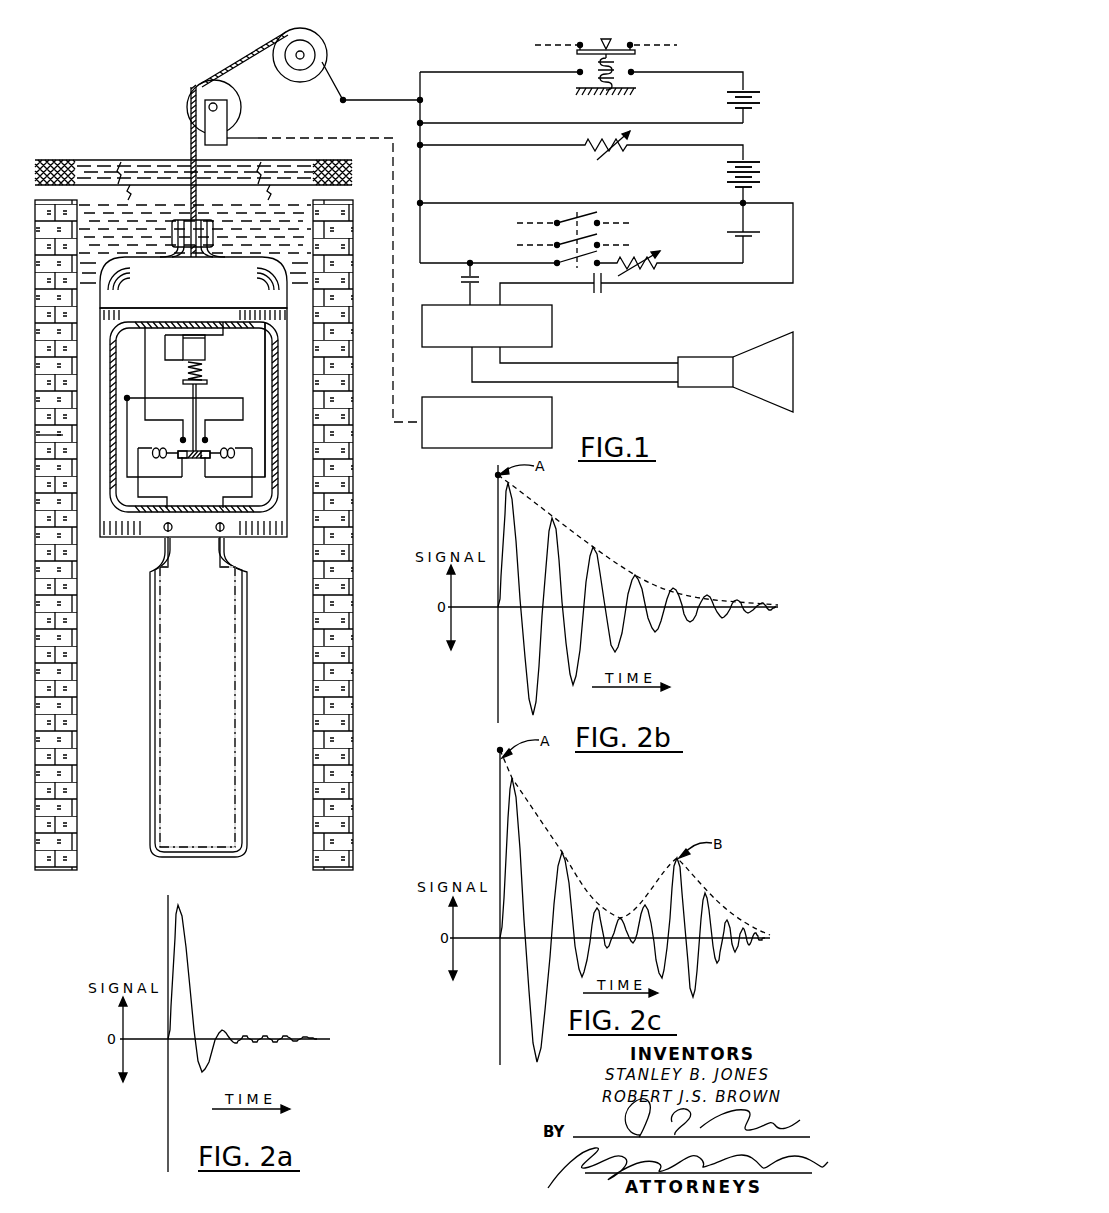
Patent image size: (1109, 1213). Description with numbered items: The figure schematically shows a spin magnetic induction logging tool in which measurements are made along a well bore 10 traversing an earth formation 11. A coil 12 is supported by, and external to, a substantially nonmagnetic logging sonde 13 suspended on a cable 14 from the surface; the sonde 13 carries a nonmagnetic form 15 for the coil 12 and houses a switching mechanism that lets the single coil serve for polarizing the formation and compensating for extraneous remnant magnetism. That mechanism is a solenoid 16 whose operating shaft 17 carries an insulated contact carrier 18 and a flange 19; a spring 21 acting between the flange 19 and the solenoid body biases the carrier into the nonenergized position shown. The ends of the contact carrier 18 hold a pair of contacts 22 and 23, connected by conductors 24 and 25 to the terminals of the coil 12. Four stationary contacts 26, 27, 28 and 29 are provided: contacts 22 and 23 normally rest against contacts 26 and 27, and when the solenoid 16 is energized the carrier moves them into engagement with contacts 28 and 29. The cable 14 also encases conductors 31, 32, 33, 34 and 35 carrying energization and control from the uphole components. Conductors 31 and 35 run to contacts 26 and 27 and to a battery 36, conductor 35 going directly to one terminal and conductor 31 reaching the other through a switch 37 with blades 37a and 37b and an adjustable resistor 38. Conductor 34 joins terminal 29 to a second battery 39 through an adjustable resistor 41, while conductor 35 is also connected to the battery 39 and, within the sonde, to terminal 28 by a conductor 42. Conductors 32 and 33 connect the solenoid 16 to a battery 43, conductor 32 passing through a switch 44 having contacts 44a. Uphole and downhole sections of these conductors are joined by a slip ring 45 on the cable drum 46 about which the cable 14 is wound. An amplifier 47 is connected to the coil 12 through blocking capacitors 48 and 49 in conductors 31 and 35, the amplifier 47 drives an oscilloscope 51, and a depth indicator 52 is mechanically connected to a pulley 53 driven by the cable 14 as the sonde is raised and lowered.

The well bore 10 is at (81, 645).
The earth formation 11 is at (52, 426).
The coil 12 is at (200, 845).
The logging sonde 13 is at (110, 398).
The cable 14 is at (190, 135).
The nonmagnetic form 15 is at (163, 845).
The solenoid 16 is at (206, 347).
The operating shaft 17 is at (198, 396).
The insulated contact carrier 18 is at (197, 460).
The flange 19 is at (207, 382).
The spring 21 is at (203, 364).
The contact 22 is at (211, 452).
The contact 23 is at (178, 452).
The conductor 24 is at (250, 485).
The conductor 25 is at (140, 485).
The stationary contact 26 is at (211, 458).
The stationary contact 27 is at (182, 458).
The stationary contact 28 is at (207, 438).
The stationary contact 29 is at (182, 438).
The conductor 31 is at (267, 358).
The conductor 32 is at (224, 326).
The conductor 33 is at (173, 360).
The conductor 34 is at (147, 383).
The conductor 35 is at (123, 358).
The battery 36 is at (757, 232).
The switch 37 is at (568, 268).
The switch blade 37a is at (582, 215).
The switch blade 37b is at (573, 240).
The adjustable resistor 38 is at (655, 246).
The second battery 39 is at (757, 163).
The adjustable resistor 41 is at (621, 150).
The conductor 42 is at (183, 402).
The battery 43 is at (755, 92).
The switch 44 is at (636, 52).
The contacts 44a is at (631, 44).
The slip ring 45 is at (275, 39).
The cable drum 46 is at (323, 44).
The amplifier 47 is at (553, 326).
The blocking capacitor 48 is at (462, 283).
The blocking capacitor 49 is at (605, 293).
The oscilloscope 51 is at (713, 388).
The depth indicator 52 is at (553, 420).
The pulley 53 is at (196, 86).